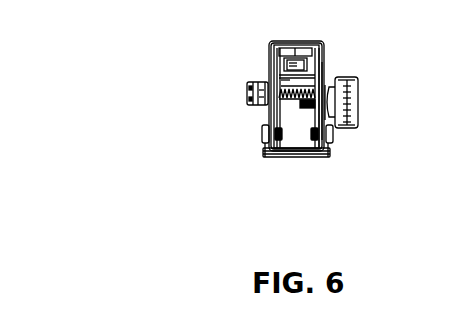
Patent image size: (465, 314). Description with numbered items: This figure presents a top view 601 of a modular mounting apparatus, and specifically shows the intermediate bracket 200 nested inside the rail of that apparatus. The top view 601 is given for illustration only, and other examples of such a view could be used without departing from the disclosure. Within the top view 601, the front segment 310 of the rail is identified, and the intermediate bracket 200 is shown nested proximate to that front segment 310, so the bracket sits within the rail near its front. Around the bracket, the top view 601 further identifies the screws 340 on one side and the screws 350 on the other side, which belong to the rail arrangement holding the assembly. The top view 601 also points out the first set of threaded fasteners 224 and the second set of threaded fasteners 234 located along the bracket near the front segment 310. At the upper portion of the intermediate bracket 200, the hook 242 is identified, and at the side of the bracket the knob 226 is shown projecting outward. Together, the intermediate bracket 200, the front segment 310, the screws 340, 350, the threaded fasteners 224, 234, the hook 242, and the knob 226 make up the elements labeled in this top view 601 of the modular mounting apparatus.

The top view 601 is at (92, 99).
The hook 242 is at (323, 58).
The knob 226 is at (360, 102).
The intermediate bracket 200 is at (298, 152).
The screws 350 is at (261, 146).
The screws 340 is at (332, 146).
The front segment 310 is at (293, 153).
The second set of threaded fasteners 234 is at (263, 156).
The first set of threaded fasteners 224 is at (317, 154).